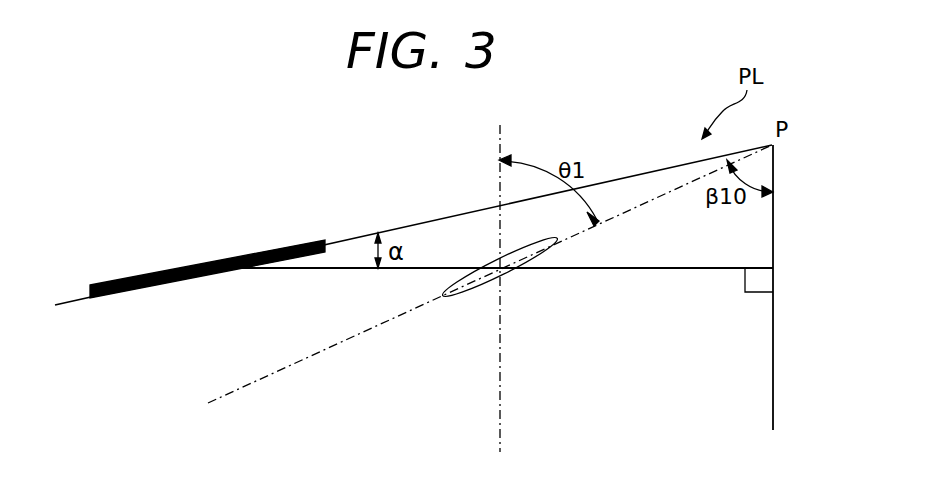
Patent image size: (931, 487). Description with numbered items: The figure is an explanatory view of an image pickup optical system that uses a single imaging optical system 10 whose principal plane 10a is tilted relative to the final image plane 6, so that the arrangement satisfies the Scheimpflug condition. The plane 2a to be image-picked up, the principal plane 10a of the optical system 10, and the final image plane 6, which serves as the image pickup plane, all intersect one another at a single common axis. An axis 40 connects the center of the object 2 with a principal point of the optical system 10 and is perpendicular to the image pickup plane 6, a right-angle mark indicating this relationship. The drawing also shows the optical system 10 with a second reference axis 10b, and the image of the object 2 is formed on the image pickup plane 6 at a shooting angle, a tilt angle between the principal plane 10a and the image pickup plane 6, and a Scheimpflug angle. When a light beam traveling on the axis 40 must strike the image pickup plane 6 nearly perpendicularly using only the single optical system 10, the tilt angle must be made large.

The object 2 is at (172, 283).
The plane to be image-picked up 2a is at (437, 218).
The optical system 10 is at (470, 298).
The principal plane 10a is at (270, 377).
The vertical reference axis 10b is at (503, 357).
The axis 40 is at (495, 298).
The final image plane 6 is at (774, 337).